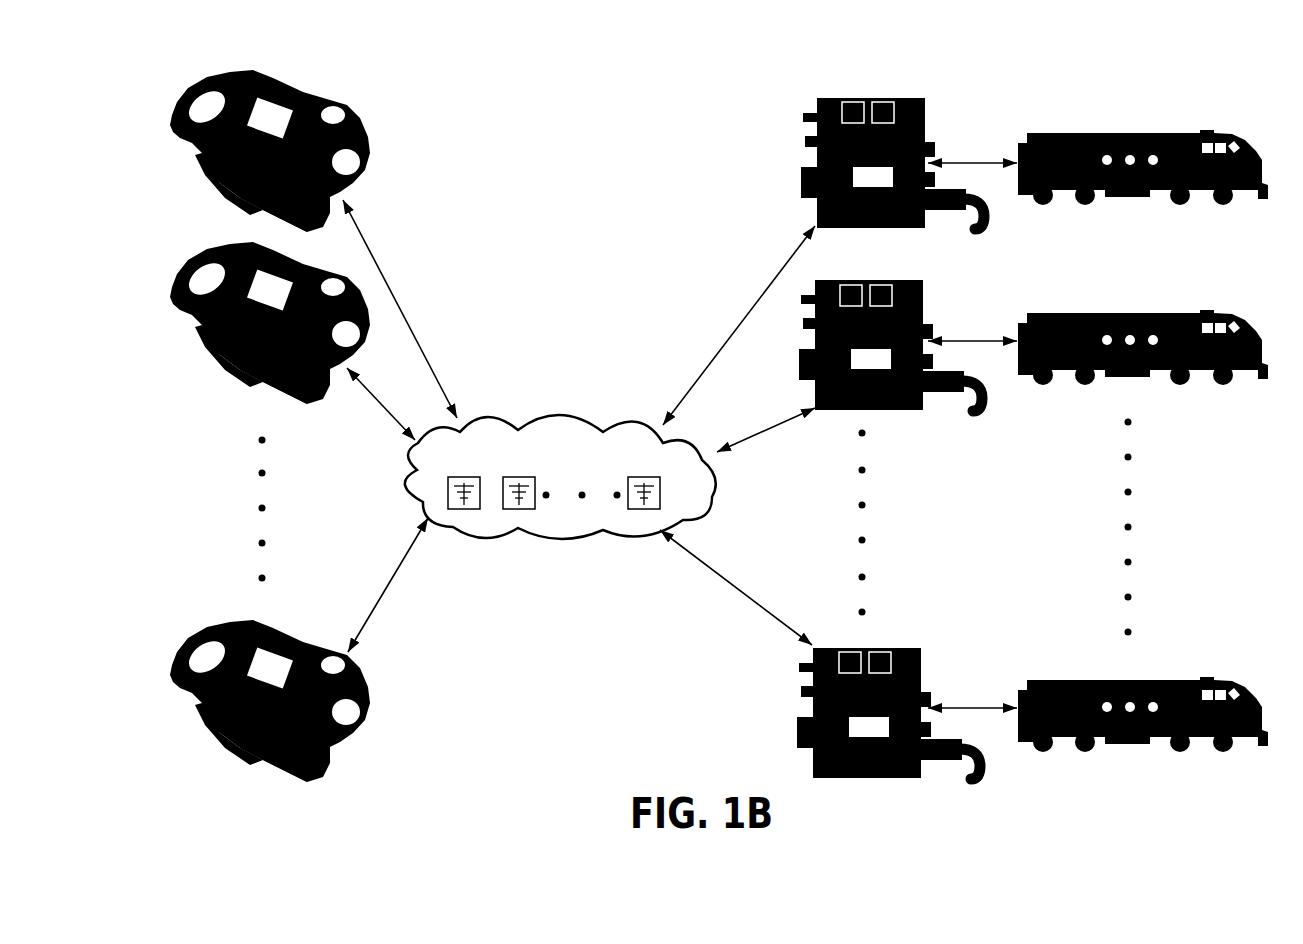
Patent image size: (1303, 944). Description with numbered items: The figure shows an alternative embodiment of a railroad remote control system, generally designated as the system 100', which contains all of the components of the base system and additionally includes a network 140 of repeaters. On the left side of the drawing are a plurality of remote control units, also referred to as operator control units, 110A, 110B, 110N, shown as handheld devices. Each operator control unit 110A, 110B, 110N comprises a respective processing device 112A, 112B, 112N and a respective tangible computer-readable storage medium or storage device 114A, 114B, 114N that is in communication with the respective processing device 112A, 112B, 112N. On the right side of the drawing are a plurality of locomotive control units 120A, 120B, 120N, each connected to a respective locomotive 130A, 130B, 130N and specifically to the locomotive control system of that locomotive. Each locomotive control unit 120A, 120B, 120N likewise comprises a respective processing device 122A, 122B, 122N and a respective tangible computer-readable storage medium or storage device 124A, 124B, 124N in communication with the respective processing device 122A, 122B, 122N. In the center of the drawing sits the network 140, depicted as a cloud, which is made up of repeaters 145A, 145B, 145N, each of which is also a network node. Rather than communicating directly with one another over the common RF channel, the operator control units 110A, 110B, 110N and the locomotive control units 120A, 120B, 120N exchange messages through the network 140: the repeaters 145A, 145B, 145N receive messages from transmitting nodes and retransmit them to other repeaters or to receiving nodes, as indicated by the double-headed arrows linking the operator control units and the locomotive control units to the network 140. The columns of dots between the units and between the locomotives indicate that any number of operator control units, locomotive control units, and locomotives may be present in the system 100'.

The railroad remote control system 100' is at (1242, 54).
The operator control unit 110A is at (360, 127).
The operator control unit 110B is at (307, 407).
The operator control unit 110N is at (368, 710).
The processing device 112A is at (225, 182).
The processing device 112B is at (223, 350).
The processing device 112N is at (222, 728).
The storage device 114A is at (270, 210).
The storage device 114B is at (270, 378).
The storage device 114N is at (268, 757).
The locomotive control unit 120A is at (800, 178).
The locomotive control unit 120B is at (880, 408).
The locomotive control unit 120N is at (905, 777).
The processing device 122A is at (850, 102).
The processing device 122B is at (852, 285).
The processing device 122N is at (848, 650).
The storage device 124A is at (883, 102).
The storage device 124B is at (880, 285).
The storage device 124N is at (882, 650).
The locomotive 130A is at (1190, 197).
The locomotive 130B is at (1190, 377).
The locomotive 130N is at (1188, 743).
The network 140 is at (560, 415).
The repeater 145A is at (468, 510).
The repeater 145B is at (520, 510).
The repeater 145N is at (663, 493).